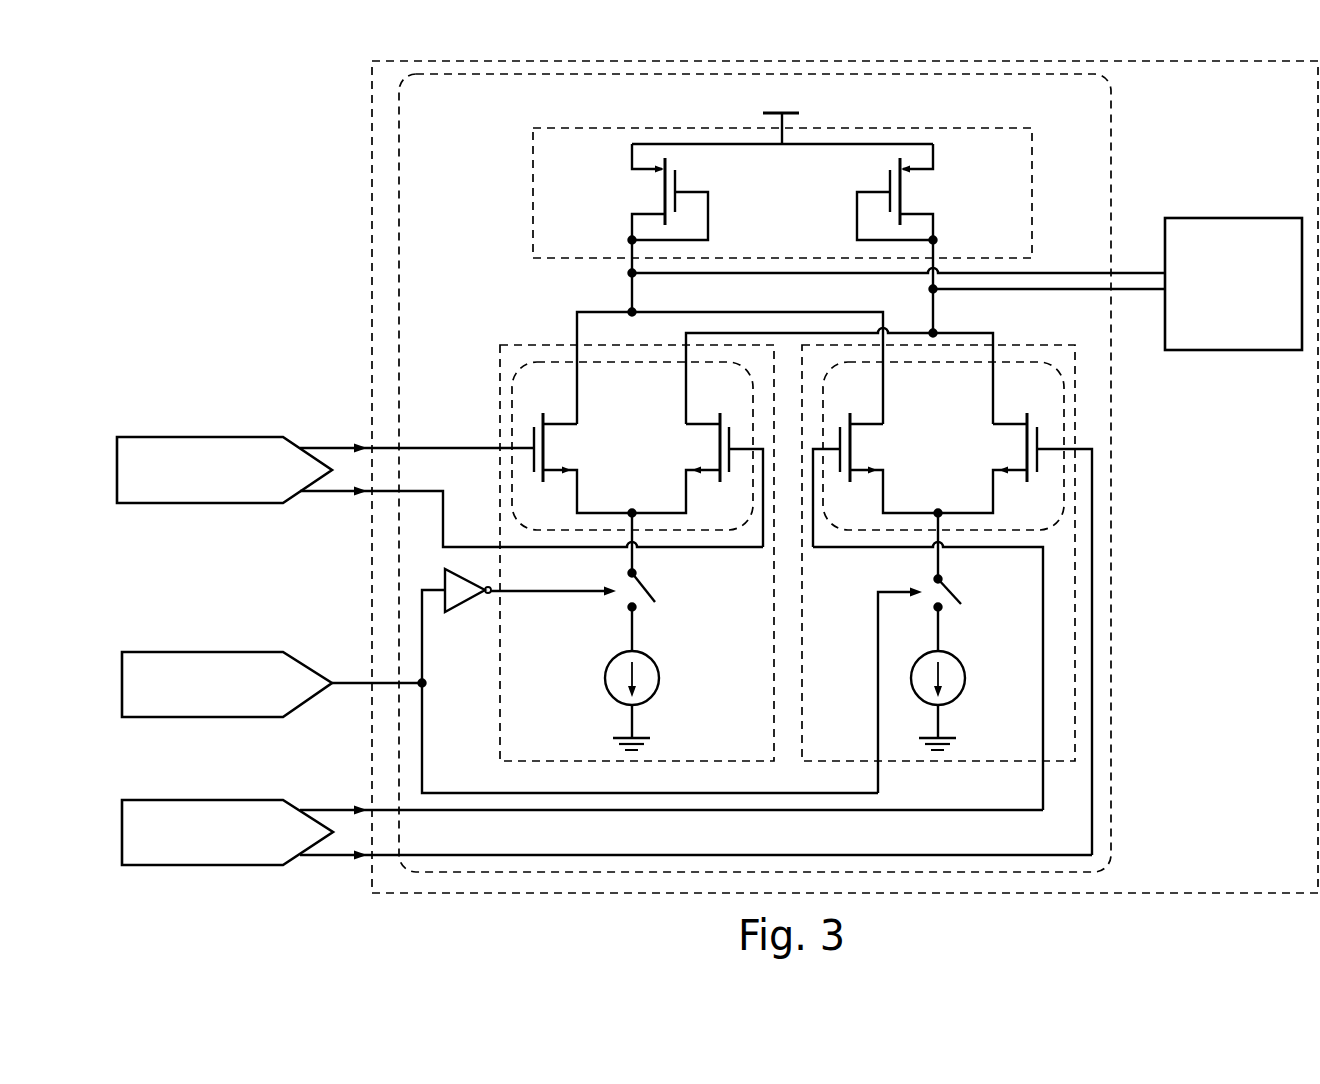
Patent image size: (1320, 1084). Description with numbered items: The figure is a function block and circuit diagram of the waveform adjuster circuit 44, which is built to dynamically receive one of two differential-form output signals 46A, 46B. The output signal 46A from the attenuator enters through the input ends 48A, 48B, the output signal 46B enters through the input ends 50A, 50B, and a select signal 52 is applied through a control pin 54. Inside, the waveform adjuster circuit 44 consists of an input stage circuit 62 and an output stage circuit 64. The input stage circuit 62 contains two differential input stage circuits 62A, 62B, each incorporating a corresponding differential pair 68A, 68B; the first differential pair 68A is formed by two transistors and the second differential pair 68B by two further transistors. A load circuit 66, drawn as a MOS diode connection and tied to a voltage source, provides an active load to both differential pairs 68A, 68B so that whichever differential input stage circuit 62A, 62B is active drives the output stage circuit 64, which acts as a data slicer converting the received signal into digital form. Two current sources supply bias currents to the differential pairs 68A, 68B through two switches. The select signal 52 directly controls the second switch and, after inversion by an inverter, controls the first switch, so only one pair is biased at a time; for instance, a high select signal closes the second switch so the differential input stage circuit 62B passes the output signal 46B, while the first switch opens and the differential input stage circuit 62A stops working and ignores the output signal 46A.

The waveform adjuster circuit 44 is at (372, 247).
The output signal 46A is at (157, 437).
The output signal 46B is at (152, 800).
The input end 48A is at (347, 445).
The input end 48B is at (347, 495).
The input end 50A is at (347, 808).
The input end 50B is at (347, 857).
The select signal 52 is at (173, 652).
The control pin 54 is at (365, 680).
The input stage circuit 62 is at (1110, 598).
The differential input stage circuit 62A is at (553, 343).
The differential input stage circuit 62B is at (1018, 343).
The output stage circuit 64 is at (1235, 217).
The load circuit 66 is at (533, 163).
The differential pair 68A is at (510, 417).
The differential pair 68B is at (1065, 428).